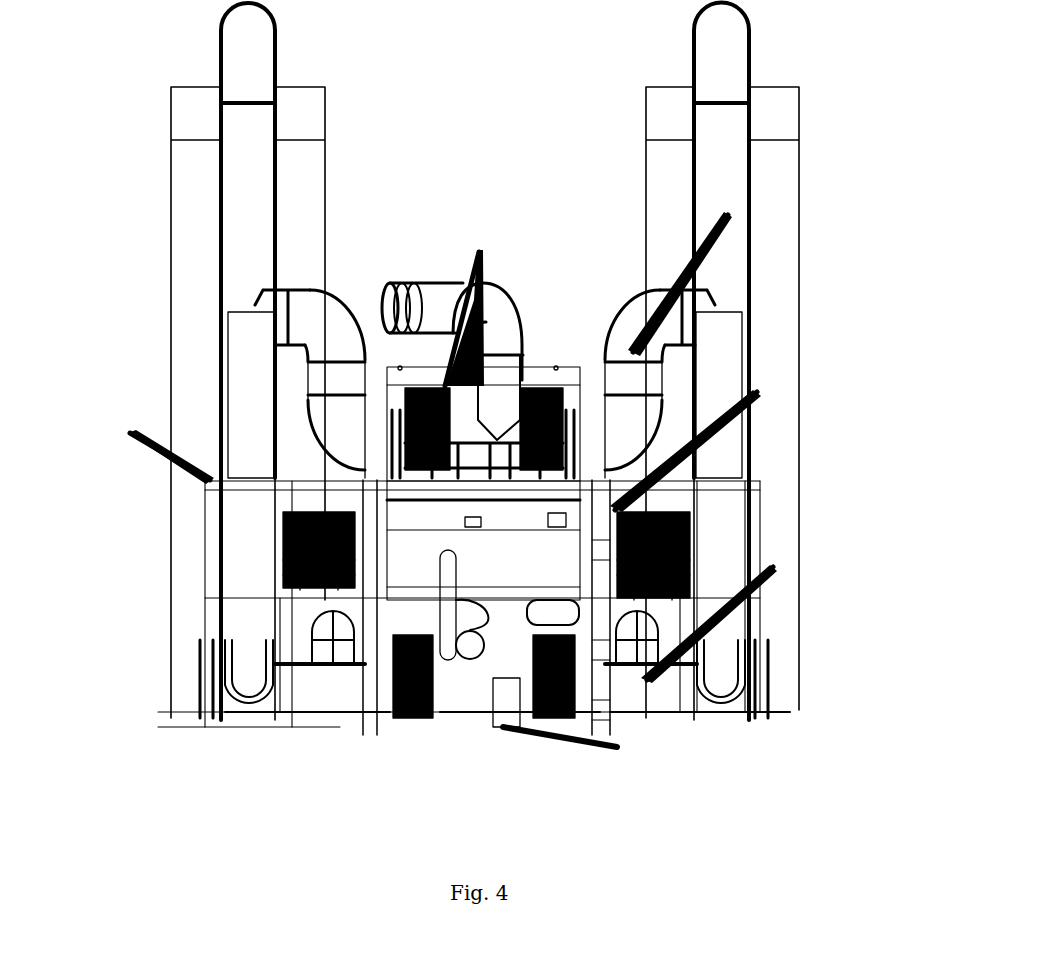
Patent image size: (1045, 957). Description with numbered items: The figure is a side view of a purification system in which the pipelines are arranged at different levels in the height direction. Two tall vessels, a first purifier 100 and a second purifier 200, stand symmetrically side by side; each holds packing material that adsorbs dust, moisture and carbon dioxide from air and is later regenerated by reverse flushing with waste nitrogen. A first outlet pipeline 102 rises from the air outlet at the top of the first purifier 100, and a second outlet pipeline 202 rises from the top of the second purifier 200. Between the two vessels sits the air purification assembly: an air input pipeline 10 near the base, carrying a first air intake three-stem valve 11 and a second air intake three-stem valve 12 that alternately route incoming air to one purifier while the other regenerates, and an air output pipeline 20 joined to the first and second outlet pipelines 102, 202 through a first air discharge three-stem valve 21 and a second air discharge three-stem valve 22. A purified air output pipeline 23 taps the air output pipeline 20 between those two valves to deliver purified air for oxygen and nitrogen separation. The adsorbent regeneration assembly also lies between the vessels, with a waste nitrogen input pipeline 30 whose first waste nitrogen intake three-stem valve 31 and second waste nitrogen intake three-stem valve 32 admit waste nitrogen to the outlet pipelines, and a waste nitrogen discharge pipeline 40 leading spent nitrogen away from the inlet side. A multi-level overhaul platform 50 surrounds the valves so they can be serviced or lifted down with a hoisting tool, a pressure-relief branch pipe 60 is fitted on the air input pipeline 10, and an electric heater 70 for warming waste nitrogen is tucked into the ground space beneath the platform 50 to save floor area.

The first purifier 100 is at (787, 125).
The first outlet pipeline 102 is at (723, 62).
The second purifier 200 is at (190, 182).
The second outlet pipeline 202 is at (265, 60).
The air input pipeline 10 is at (727, 612).
The first air intake three-stem valve 11 is at (648, 730).
The second air intake three-stem valve 12 is at (408, 700).
The air output pipeline 20 is at (686, 269).
The first air discharge three-stem valve 21 is at (485, 360).
The second air discharge three-stem valve 22 is at (466, 303).
The purified air output pipeline 23 is at (398, 290).
The waste nitrogen input pipeline 30 is at (708, 439).
The first waste nitrogen intake three-stem valve 31 is at (653, 545).
The second waste nitrogen intake three-stem valve 32 is at (308, 535).
The waste nitrogen discharge pipeline 40 is at (245, 385).
The overhaul platform 50 is at (434, 579).
The branch pipe 60 is at (653, 618).
The electric heater 70 is at (603, 712).